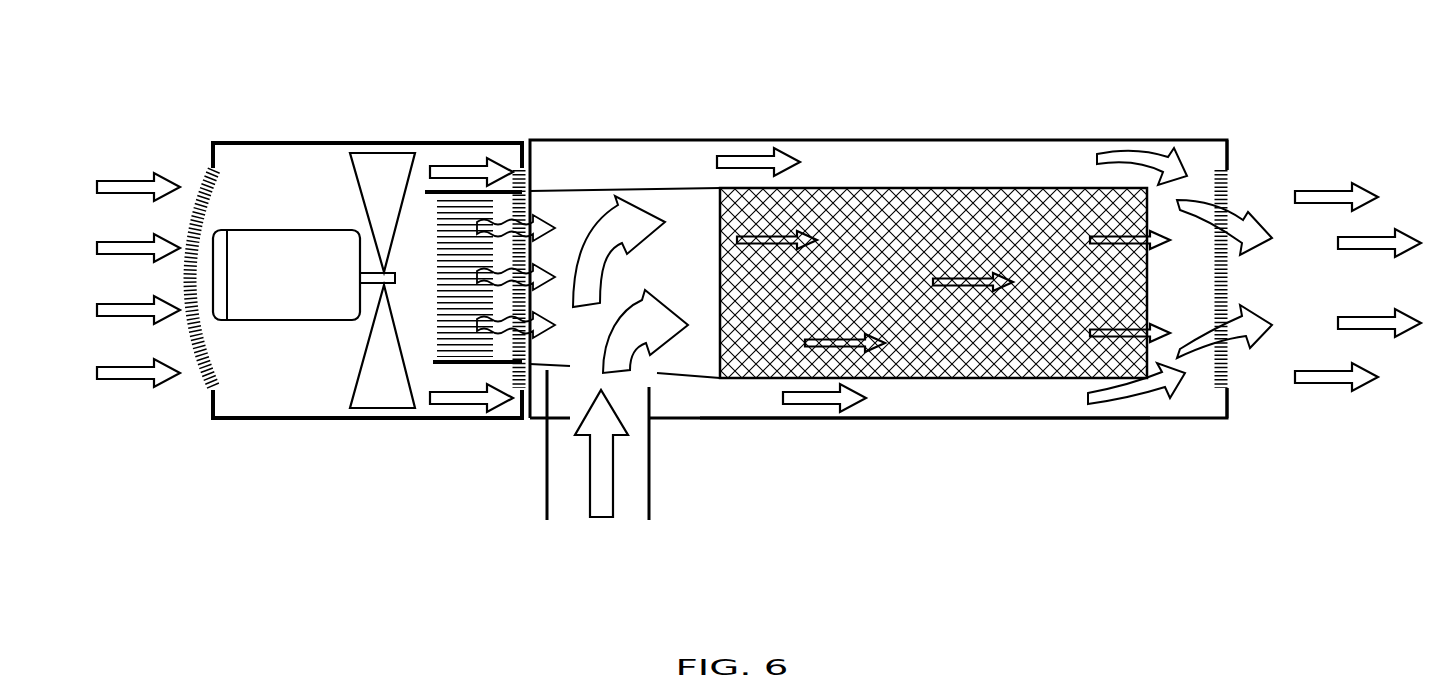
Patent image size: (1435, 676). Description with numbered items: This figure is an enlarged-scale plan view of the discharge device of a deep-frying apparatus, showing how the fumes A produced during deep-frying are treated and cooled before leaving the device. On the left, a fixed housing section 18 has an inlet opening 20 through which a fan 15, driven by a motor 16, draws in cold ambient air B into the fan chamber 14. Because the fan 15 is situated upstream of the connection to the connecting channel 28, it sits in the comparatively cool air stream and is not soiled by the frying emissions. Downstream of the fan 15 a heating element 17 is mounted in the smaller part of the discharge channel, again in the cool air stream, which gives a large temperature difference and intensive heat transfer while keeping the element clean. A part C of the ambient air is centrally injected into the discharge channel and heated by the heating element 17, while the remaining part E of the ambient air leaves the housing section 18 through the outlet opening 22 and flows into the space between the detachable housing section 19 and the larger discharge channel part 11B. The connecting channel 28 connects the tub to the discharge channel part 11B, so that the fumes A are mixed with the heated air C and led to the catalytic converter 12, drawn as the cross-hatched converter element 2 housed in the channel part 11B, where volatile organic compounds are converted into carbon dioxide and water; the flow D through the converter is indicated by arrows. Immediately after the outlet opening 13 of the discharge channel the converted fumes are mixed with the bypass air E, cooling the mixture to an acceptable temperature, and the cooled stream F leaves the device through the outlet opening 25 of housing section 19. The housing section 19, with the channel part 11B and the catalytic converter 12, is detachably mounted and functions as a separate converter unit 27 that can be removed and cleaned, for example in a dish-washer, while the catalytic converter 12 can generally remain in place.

The filter 2 is at (913, 163).
The discharge channel part 11B is at (657, 193).
The catalytic converter 12 is at (690, 372).
The outlet opening 13 is at (1147, 203).
The fan chamber 14 is at (280, 187).
The fan 15 is at (378, 173).
The motor 16 is at (286, 275).
The heating element 17 is at (465, 252).
The housing section 18 is at (237, 140).
The housing section 19 is at (995, 420).
The inlet opening 20 is at (205, 188).
The outlet opening 22 is at (525, 207).
The outlet opening 25 is at (1230, 197).
The converter unit 27 is at (927, 436).
The connecting channel 28 is at (547, 465).
The fumes A is at (605, 518).
The ambient air B is at (120, 385).
The heated ambient air C is at (590, 213).
The air flow through filter D is at (960, 273).
The remaining part of the ambient air E is at (747, 158).
The outlet air flow F is at (1328, 197).